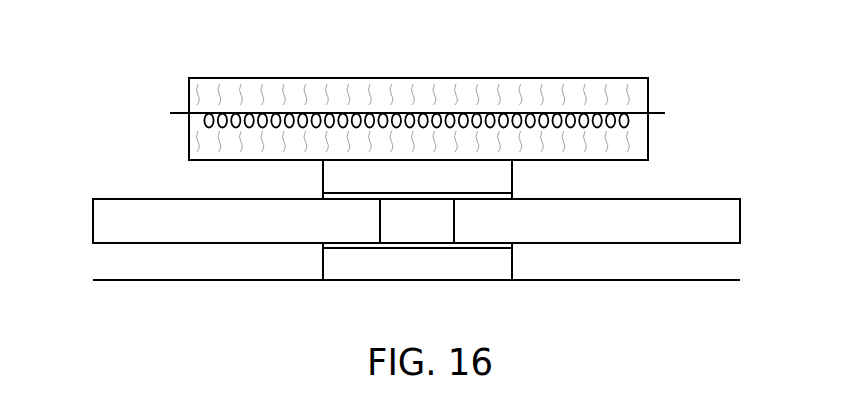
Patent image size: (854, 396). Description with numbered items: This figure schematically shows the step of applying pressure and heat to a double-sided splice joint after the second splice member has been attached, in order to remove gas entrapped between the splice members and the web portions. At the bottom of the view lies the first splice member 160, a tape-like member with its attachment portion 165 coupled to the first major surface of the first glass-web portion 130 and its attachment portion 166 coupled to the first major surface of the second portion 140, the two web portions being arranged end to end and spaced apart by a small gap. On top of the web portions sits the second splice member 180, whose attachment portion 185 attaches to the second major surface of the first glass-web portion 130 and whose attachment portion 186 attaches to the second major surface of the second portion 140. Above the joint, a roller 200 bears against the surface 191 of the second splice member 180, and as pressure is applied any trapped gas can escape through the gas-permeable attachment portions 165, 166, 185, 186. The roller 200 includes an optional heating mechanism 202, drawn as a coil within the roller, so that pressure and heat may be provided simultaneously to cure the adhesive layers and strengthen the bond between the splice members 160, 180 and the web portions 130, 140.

The roller 200 is at (233, 78).
The surface of the second splice member 191 is at (474, 160).
The heating mechanism 202 is at (630, 118).
The attachment portion 186 is at (343, 172).
The attachment portion 185 is at (490, 172).
The second splice member 180 is at (388, 175).
The second portion 140 is at (101, 222).
The first glass-web portion 130 is at (733, 220).
The attachment portion 166 is at (340, 270).
The first splice member 160 is at (433, 270).
The attachment portion 165 is at (493, 270).